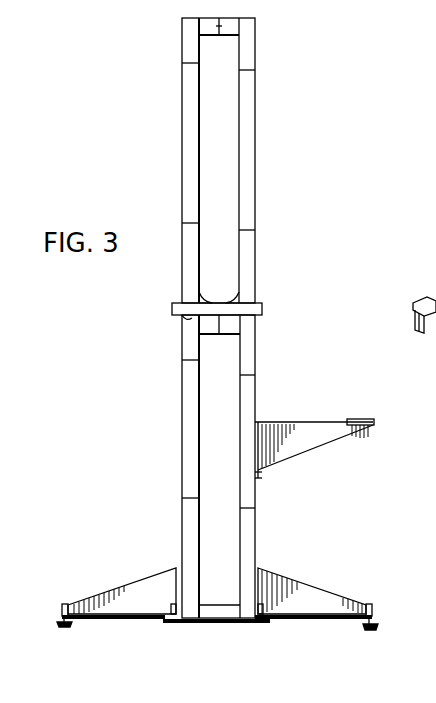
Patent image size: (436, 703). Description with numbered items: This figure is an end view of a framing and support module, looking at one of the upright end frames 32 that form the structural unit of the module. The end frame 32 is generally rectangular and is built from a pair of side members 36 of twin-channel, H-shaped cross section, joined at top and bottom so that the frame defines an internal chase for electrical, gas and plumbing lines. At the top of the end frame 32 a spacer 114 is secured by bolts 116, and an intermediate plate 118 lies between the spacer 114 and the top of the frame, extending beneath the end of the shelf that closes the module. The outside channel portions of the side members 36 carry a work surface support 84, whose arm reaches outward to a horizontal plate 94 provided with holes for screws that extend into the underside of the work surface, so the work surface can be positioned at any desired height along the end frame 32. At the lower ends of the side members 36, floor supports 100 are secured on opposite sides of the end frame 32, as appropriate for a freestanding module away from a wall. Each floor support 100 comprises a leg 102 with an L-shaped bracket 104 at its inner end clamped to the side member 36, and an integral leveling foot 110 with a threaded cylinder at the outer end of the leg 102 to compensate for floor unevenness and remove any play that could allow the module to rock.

The upright end frame 32 is at (180, 76).
The side member 36 is at (247, 361).
The spacer 114 is at (262, 312).
The bolt 116 is at (205, 300).
The intermediate plate 118 is at (182, 317).
The work surface support 84 is at (330, 452).
The horizontal plate 94 is at (361, 419).
The floor support 100 is at (130, 575).
The leg 102 is at (130, 620).
The L-shaped bracket 104 is at (182, 623).
The leveling foot 110 is at (64, 628).